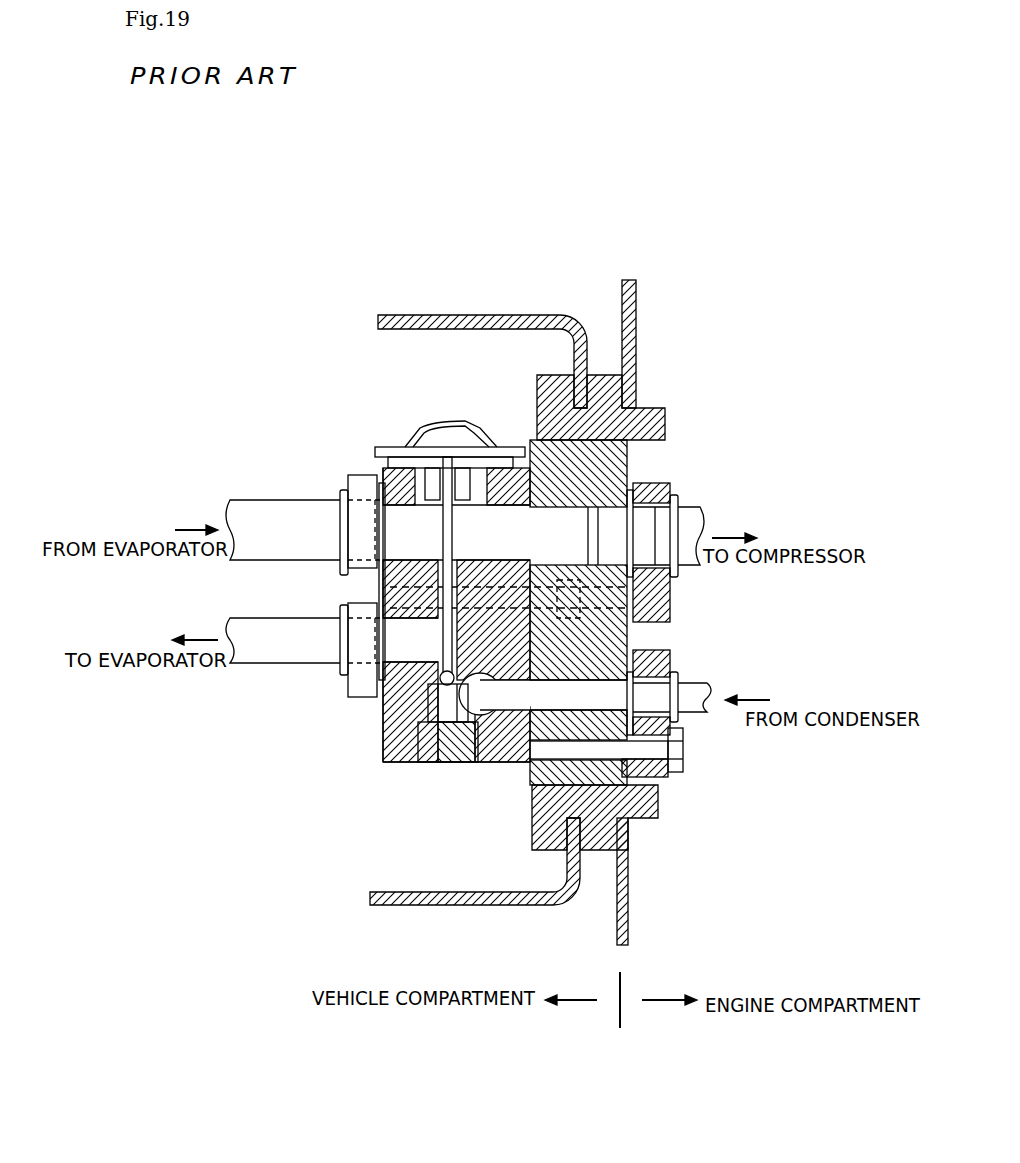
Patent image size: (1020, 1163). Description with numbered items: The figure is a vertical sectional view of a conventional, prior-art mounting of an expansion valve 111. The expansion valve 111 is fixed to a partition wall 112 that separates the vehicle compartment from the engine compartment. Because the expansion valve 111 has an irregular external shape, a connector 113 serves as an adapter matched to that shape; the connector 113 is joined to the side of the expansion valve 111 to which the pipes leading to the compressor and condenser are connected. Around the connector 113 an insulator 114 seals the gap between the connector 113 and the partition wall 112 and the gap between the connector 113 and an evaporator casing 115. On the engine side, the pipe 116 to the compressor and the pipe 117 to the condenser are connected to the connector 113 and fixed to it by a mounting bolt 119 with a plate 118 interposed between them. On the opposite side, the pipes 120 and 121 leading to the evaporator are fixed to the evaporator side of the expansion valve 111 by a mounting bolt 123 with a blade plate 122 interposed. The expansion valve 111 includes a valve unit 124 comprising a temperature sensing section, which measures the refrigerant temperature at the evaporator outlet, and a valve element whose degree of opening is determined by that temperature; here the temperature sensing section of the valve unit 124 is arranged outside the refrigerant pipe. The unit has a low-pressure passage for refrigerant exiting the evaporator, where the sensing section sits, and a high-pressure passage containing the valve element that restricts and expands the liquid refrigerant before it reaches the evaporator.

The expansion valve 111 is at (382, 740).
The partition wall 112 is at (638, 310).
The connector 113 is at (627, 460).
The insulator 114 is at (657, 421).
The evaporator casing 115 is at (416, 315).
The pipe to compressor 116 is at (698, 505).
The pipe to condenser 117 is at (695, 717).
The plate 118 is at (665, 668).
The mounting bolt 119 is at (685, 750).
The pipe to evaporator 120 is at (293, 500).
The pipe to evaporator 121 is at (262, 664).
The blade plate 122 is at (366, 475).
The mounting bolt 123 is at (370, 592).
The valve unit 124 is at (449, 423).